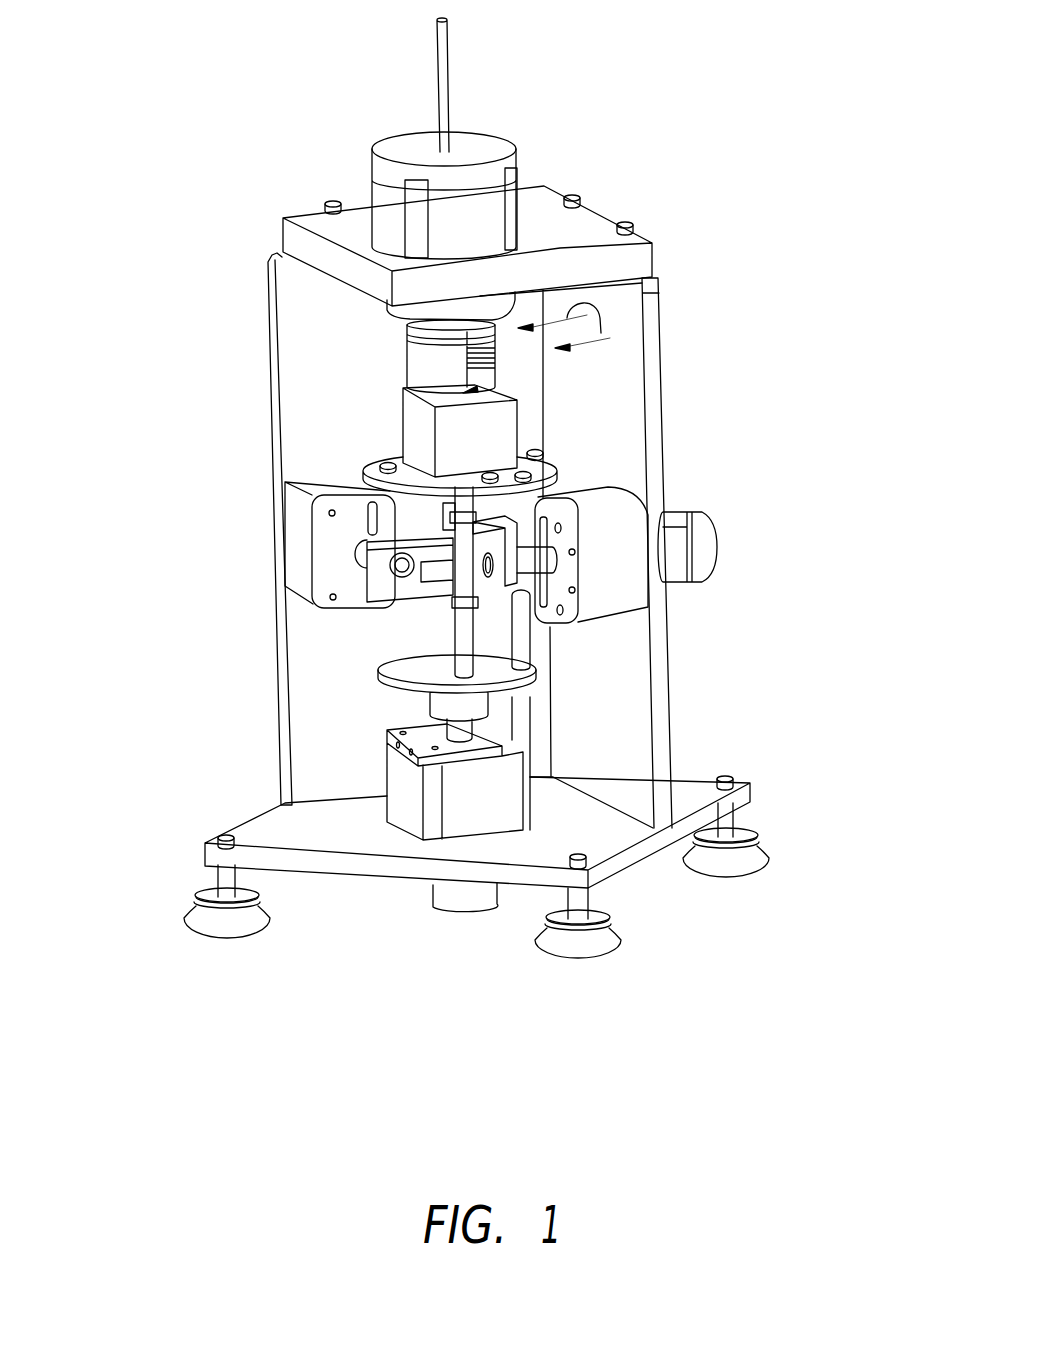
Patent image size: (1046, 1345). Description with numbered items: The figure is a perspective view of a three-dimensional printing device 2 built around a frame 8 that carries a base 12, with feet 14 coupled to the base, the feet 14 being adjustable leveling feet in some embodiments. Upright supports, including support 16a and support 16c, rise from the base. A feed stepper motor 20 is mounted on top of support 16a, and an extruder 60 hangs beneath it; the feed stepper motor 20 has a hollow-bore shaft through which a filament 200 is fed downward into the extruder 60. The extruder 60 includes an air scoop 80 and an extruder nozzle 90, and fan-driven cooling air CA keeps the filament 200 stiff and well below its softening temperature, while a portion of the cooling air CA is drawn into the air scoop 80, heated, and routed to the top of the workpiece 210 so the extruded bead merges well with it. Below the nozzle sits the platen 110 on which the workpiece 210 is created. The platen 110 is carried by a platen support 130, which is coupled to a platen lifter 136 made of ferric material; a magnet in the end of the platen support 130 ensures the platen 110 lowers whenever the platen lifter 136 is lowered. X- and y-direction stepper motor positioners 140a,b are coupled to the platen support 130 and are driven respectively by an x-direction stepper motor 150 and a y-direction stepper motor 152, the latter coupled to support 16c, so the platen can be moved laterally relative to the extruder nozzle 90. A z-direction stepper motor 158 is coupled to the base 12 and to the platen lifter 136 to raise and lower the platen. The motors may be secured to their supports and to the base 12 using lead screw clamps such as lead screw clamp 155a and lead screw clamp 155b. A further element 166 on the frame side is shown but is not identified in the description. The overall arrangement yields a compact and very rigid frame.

The 3D printing device 2 is at (182, 152).
The frame 8 is at (295, 287).
The base 12 is at (272, 827).
The feet 14 is at (222, 927).
The support 16a is at (628, 265).
The support 16c is at (615, 640).
The feed stepper motor 20 is at (488, 204).
The extruder 60 is at (407, 334).
The air scoop 80 is at (420, 362).
The extruder nozzle 90 is at (470, 391).
The platen 110 is at (544, 483).
The platen support 130 is at (442, 546).
The platen lifter 136 is at (500, 674).
The x- and y-direction stepper motor positioners 140a,b is at (388, 592).
The x-direction stepper motor 150 is at (308, 554).
The y-direction stepper motor 152 is at (620, 596).
The lead screw clamp 155a is at (697, 568).
The lead screw clamp 155b is at (463, 900).
The z-direction stepper motor 158 is at (498, 793).
The side support 166 is at (318, 418).
The filament 200 is at (462, 83).
The 3D workpiece 210 is at (485, 433).
The cooling air CA is at (600, 323).